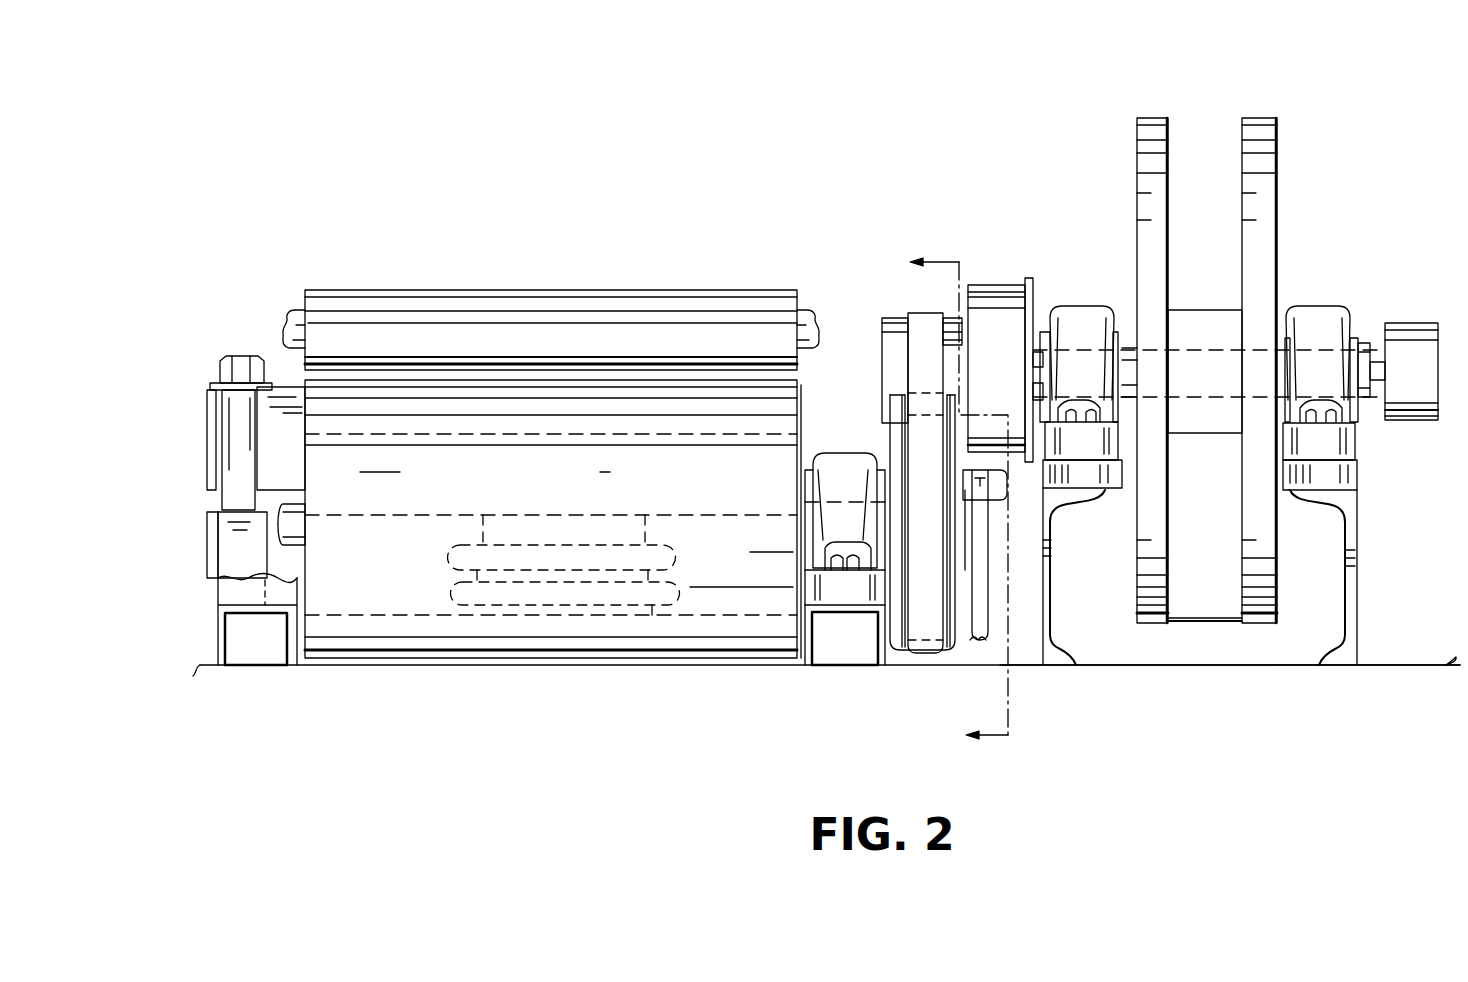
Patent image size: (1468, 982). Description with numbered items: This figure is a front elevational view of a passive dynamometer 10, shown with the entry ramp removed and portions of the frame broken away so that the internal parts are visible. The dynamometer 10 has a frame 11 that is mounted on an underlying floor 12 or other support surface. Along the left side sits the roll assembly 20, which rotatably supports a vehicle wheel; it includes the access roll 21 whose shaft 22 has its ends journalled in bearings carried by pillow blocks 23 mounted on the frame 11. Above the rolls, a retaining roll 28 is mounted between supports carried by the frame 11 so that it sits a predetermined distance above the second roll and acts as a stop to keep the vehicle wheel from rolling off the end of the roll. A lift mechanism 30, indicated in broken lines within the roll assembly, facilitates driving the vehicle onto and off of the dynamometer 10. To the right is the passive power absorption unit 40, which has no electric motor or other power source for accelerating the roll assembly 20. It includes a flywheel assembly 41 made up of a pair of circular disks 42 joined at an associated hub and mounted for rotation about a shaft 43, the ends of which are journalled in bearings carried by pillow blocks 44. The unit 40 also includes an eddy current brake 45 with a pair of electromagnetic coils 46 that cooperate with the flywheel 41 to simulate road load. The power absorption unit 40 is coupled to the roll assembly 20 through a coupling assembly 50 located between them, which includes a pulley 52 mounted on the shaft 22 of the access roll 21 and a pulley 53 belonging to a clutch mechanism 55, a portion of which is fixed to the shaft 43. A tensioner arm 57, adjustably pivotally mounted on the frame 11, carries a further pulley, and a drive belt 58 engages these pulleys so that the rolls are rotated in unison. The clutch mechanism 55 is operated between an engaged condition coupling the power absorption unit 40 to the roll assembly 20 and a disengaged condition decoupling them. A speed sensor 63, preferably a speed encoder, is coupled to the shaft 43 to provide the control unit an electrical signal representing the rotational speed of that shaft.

The dynamometer 10 is at (711, 201).
The frame 11 is at (205, 655).
The floor 12 is at (1372, 665).
The roll assembly 20 is at (553, 554).
The access roll 21 is at (738, 640).
The shaft 22 is at (300, 522).
The pillow blocks 23 is at (232, 593).
The retaining roll 28 is at (506, 300).
The lift mechanism 30 is at (441, 588).
The passive power absorption unit 40 is at (1248, 386).
The flywheel assembly 41 is at (1137, 194).
The circular disks 42 is at (1170, 157).
The shaft 43 is at (1363, 342).
The pillow blocks 44 is at (1089, 309).
The eddy current brake 45 is at (1208, 310).
The electromagnetic coils 46 is at (1207, 600).
The coupling assembly 50 is at (932, 444).
The pulley 52 is at (899, 643).
The pulley 53 is at (882, 344).
The clutch mechanism 55 is at (998, 290).
The tensioner arm 57 is at (992, 628).
The drive belt 58 is at (942, 322).
The speed sensor 63 is at (1407, 420).